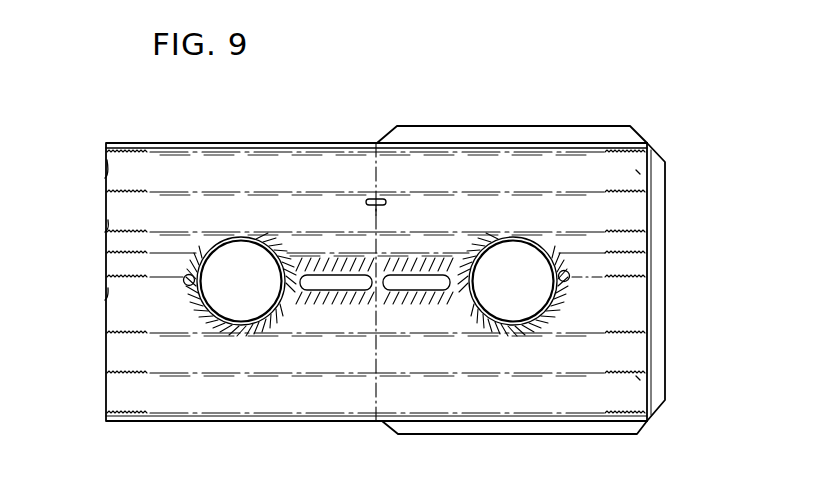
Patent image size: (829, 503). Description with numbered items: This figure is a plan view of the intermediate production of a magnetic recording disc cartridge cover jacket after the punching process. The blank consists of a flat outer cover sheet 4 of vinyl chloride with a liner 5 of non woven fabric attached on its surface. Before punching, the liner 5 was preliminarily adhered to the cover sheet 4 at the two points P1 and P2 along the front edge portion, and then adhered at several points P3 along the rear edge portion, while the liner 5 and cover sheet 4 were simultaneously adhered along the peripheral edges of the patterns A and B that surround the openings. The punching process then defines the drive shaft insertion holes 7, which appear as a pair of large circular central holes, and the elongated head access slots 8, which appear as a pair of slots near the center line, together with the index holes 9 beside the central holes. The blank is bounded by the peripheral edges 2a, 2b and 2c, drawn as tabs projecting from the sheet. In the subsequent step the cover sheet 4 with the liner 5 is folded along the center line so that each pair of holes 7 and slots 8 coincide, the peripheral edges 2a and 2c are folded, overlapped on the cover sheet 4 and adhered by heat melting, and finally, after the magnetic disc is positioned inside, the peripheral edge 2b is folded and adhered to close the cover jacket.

The liner 5 is at (283, 398).
The outer cover sheet 4 is at (318, 142).
The peripheral edge 2a is at (450, 137).
The peripheral edge 2b is at (658, 223).
The peripheral edge 2c is at (433, 430).
The drive shaft insertion hole 7 is at (216, 304).
The head access slot 8 is at (338, 278).
The index hole 9 is at (185, 285).
The pattern A is at (248, 237).
The pattern B is at (332, 293).
The adhering point P1 is at (638, 172).
The adhering point P2 is at (638, 378).
The adhering points P3 is at (107, 407).